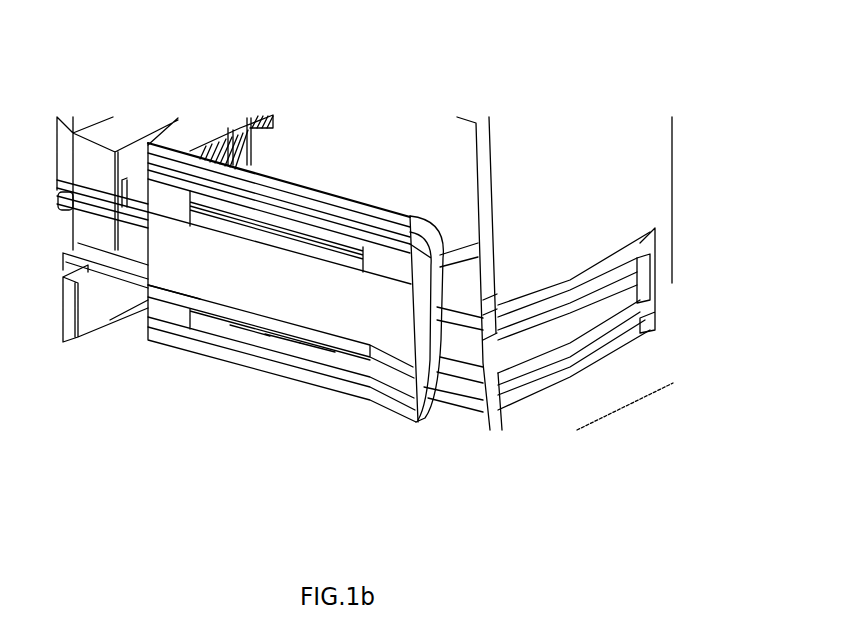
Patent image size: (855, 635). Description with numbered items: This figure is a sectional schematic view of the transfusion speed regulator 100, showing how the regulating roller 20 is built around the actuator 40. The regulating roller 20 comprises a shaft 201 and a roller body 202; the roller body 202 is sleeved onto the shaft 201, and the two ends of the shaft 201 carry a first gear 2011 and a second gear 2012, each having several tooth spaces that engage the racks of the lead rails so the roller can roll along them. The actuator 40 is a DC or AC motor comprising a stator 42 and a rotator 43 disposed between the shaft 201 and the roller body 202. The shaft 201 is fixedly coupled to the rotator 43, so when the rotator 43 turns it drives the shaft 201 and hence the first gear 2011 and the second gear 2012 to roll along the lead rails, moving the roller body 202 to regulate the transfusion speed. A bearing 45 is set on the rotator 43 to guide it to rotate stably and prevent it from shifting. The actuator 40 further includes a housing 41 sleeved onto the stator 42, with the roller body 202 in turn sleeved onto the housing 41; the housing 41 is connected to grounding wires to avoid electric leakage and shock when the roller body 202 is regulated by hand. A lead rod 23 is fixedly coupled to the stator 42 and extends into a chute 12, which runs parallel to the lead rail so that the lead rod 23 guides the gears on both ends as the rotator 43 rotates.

The transfusion speed regulator 100 is at (73, 36).
The regulating roller 20 is at (306, 273).
The roller body 202 is at (295, 182).
The shaft 201 is at (397, 342).
The first gear 2011 is at (473, 362).
The second gear 2012 is at (100, 247).
The actuator 40 is at (281, 398).
The housing 41 is at (247, 343).
The stator 42 is at (280, 343).
The rotator 43 is at (315, 340).
The bearing 45 is at (168, 308).
The chute 12 is at (585, 273).
The lead rod 23 is at (529, 285).